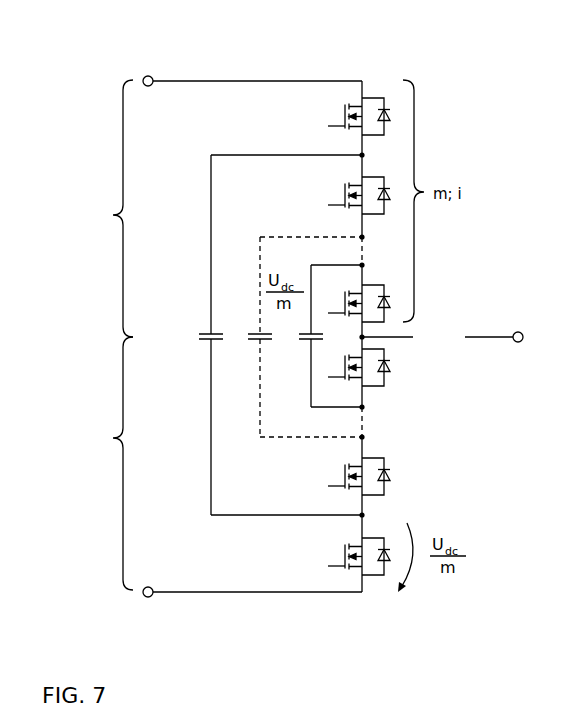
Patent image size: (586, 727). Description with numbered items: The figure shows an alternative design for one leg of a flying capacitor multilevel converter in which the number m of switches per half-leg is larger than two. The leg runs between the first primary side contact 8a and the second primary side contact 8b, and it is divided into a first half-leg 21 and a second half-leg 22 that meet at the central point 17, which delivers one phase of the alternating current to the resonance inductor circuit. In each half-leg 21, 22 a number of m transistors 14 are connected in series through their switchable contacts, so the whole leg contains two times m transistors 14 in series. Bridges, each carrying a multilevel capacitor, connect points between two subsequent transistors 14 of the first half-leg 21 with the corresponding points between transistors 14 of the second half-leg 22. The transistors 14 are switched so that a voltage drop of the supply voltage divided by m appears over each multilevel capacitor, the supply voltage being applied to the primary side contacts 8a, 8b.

The first primary side contact 8a is at (149, 76).
The second primary side contact 8b is at (149, 587).
The transistor 14 is at (371, 95).
The central point 17 is at (518, 331).
The first half-leg 21 is at (108, 208).
The second half-leg 22 is at (108, 463).